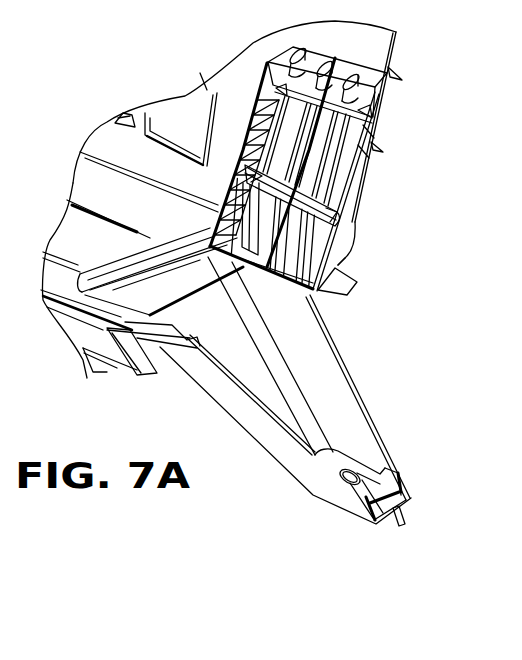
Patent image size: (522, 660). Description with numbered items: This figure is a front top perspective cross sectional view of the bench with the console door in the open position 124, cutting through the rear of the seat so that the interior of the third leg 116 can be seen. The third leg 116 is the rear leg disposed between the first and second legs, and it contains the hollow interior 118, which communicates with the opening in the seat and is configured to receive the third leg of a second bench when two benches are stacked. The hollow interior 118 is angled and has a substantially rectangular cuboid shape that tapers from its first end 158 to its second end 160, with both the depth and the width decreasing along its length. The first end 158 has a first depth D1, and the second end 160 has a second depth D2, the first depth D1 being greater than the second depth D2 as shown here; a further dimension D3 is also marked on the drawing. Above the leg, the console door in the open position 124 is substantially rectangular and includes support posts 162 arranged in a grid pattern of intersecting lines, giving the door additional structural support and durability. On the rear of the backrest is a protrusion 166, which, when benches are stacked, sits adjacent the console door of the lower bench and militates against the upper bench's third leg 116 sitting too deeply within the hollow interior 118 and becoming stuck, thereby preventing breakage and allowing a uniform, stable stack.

The open position 124 is at (152, 64).
The support posts 162 is at (335, 153).
The protrusion 166 is at (350, 277).
The hollow interior 118 is at (198, 318).
The first end 158 is at (153, 298).
The second end 160 is at (353, 432).
The third leg 116 is at (293, 463).
The first depth D1 is at (192, 255).
The second depth D2 is at (388, 493).
The dimension D3 is at (322, 130).